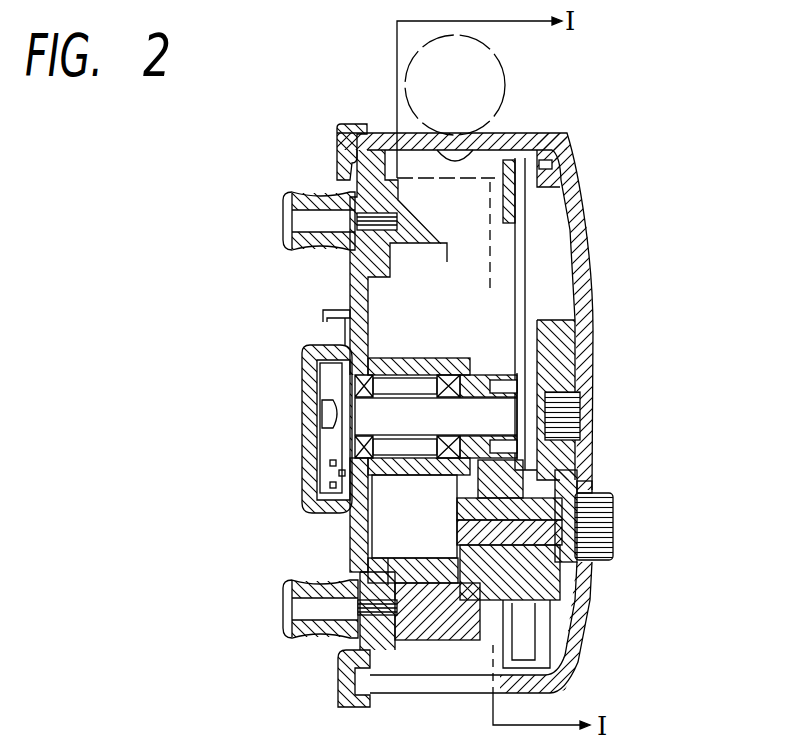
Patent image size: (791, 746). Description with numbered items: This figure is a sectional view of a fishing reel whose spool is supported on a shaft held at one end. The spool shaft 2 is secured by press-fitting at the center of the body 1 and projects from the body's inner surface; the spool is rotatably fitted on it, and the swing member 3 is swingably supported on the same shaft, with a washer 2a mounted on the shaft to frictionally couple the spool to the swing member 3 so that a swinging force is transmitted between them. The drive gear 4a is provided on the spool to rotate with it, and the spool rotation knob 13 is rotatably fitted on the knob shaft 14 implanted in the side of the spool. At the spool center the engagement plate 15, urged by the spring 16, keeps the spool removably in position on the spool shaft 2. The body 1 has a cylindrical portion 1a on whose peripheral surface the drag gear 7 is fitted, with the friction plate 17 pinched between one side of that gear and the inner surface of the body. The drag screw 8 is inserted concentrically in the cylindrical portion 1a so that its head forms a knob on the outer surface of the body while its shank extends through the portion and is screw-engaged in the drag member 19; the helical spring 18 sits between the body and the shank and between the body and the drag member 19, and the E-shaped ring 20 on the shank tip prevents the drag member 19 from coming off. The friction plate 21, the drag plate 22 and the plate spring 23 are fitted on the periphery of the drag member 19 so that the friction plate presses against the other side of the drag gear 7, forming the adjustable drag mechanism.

The body 1 is at (598, 218).
The cylindrical portion 1a is at (545, 600).
The spool shaft 2 is at (303, 412).
The washer 2a is at (545, 428).
The swing member 3 is at (323, 142).
The drive gear 4a is at (578, 356).
The drag gear 7 is at (585, 482).
The drag screw 8 is at (618, 522).
The spool rotation knob 13 is at (290, 192).
The knob shaft 14 is at (282, 220).
The engagement plate 15 is at (321, 311).
The spring 16 is at (303, 466).
The friction plate 17 is at (585, 598).
The helical spring 18 is at (590, 580).
The drag member 19 is at (457, 545).
The E-shaped ring 20 is at (457, 513).
The friction plate 21 is at (482, 593).
The drag plate 22 is at (357, 646).
The plate spring 23 is at (358, 567).